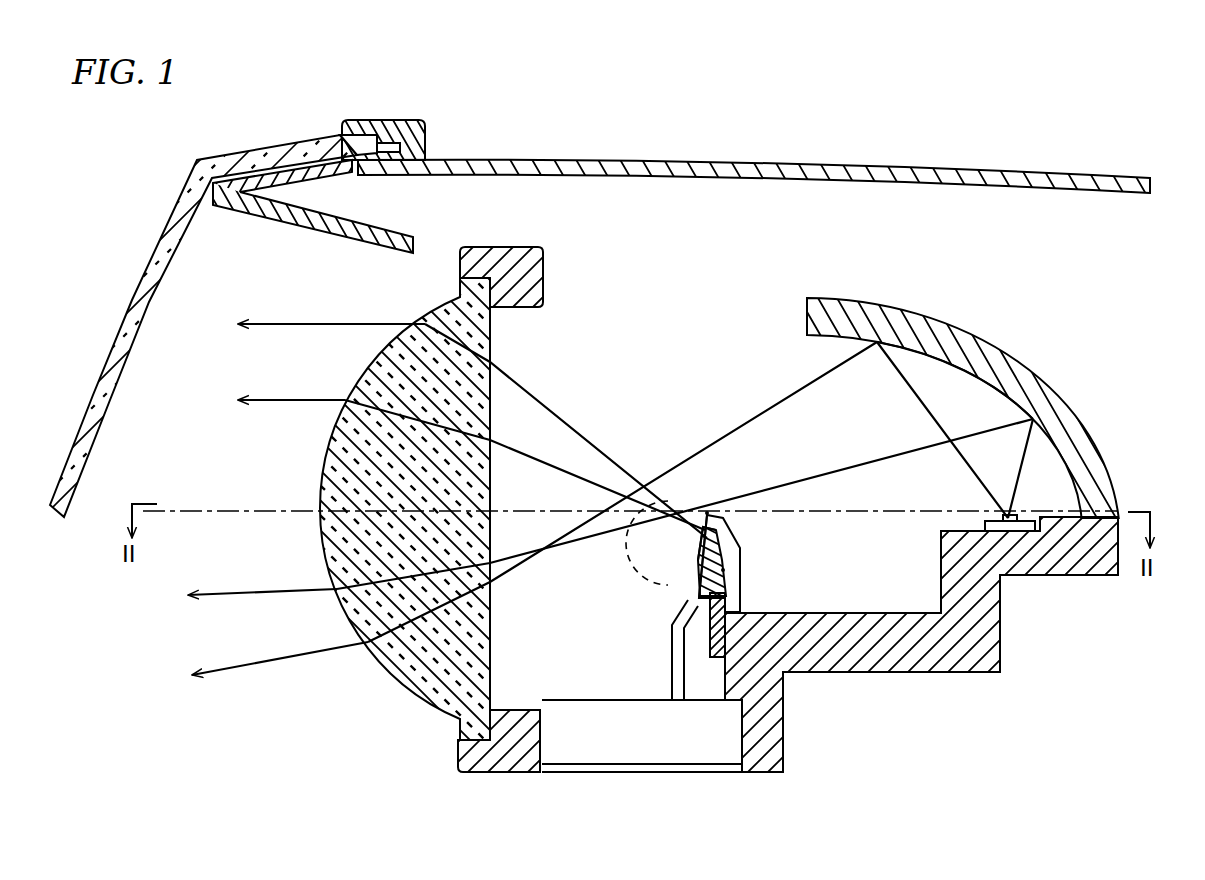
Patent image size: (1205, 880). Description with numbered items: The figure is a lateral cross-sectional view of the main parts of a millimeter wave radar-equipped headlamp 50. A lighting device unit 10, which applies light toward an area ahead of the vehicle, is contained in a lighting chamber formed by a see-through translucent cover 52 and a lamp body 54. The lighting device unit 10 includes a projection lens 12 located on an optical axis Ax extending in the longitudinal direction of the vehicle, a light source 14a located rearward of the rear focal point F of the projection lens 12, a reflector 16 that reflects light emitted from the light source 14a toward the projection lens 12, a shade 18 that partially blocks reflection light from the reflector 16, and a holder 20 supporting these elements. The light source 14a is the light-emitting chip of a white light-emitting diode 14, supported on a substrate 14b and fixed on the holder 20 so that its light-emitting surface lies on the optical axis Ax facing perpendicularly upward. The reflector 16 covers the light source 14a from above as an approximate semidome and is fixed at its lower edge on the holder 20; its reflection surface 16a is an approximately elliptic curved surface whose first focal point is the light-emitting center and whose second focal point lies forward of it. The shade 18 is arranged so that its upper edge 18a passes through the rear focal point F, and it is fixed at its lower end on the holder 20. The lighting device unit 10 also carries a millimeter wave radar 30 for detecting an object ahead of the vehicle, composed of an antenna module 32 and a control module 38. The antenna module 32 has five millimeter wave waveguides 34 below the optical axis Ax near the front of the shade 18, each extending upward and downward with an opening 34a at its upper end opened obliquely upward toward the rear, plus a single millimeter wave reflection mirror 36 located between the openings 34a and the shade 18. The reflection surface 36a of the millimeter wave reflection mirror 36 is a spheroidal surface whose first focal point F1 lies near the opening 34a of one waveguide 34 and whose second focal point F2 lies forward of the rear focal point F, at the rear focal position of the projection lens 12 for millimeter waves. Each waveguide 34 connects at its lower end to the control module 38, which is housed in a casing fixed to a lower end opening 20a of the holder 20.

The lighting device unit 10 is at (965, 260).
The projection lens 12 is at (363, 372).
The white light-emitting diode 14 is at (997, 543).
The light source 14a is at (1013, 518).
The substrate 14b is at (1013, 533).
The reflector 16 is at (1040, 372).
The reflection surface 16a is at (975, 378).
The shade 18 is at (752, 518).
The upper edge 18a is at (703, 520).
The holder 20 is at (1003, 631).
The lower end opening 20a is at (545, 745).
The millimeter wave radar 30 is at (530, 657).
The antenna module 32 is at (696, 610).
The millimeter wave waveguide 34 is at (716, 645).
The opening 34a is at (727, 595).
The millimeter wave reflection mirror 36 is at (657, 565).
The reflection surface 36a is at (695, 553).
The control module 38 is at (692, 770).
The millimeter wave radar-equipped headlamp 50 is at (584, 298).
The translucent cover 52 is at (166, 226).
The lamp body 54 is at (870, 163).
The rear focal point F is at (708, 513).
The first focal point F1 is at (723, 570).
The second focal point F2 is at (658, 514).
The optical axis Ax is at (205, 514).